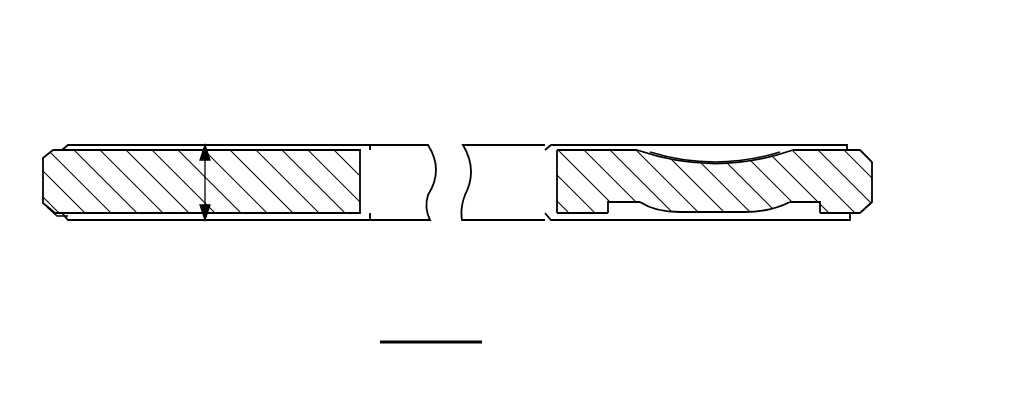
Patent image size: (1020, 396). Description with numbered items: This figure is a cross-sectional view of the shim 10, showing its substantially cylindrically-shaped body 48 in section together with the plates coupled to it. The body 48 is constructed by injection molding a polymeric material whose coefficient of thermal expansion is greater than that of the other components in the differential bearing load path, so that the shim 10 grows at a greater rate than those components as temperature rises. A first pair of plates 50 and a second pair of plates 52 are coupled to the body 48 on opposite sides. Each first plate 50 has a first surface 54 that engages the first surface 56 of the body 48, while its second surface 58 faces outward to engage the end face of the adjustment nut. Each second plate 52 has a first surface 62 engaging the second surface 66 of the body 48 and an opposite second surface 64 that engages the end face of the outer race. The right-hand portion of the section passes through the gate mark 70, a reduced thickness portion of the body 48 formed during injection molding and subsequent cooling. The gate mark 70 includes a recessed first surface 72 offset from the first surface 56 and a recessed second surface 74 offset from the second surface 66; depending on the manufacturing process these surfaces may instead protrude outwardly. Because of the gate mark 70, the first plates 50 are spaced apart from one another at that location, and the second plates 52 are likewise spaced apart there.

The shim 10 is at (210, 76).
The body 48 is at (60, 157).
The first pair of plates 50 is at (163, 149).
The second pair of plates 52 is at (322, 221).
The first surface of first plate 54 is at (263, 150).
The first surface of body 56 is at (853, 149).
The second surface of first plate 58 is at (115, 146).
The first surface of second plate 62 is at (118, 205).
The second surface of second plate 64 is at (158, 221).
The second surface of body 66 is at (853, 220).
The gate mark 70 is at (752, 146).
The recessed first surface 72 is at (688, 156).
The recessed second surface 74 is at (780, 213).